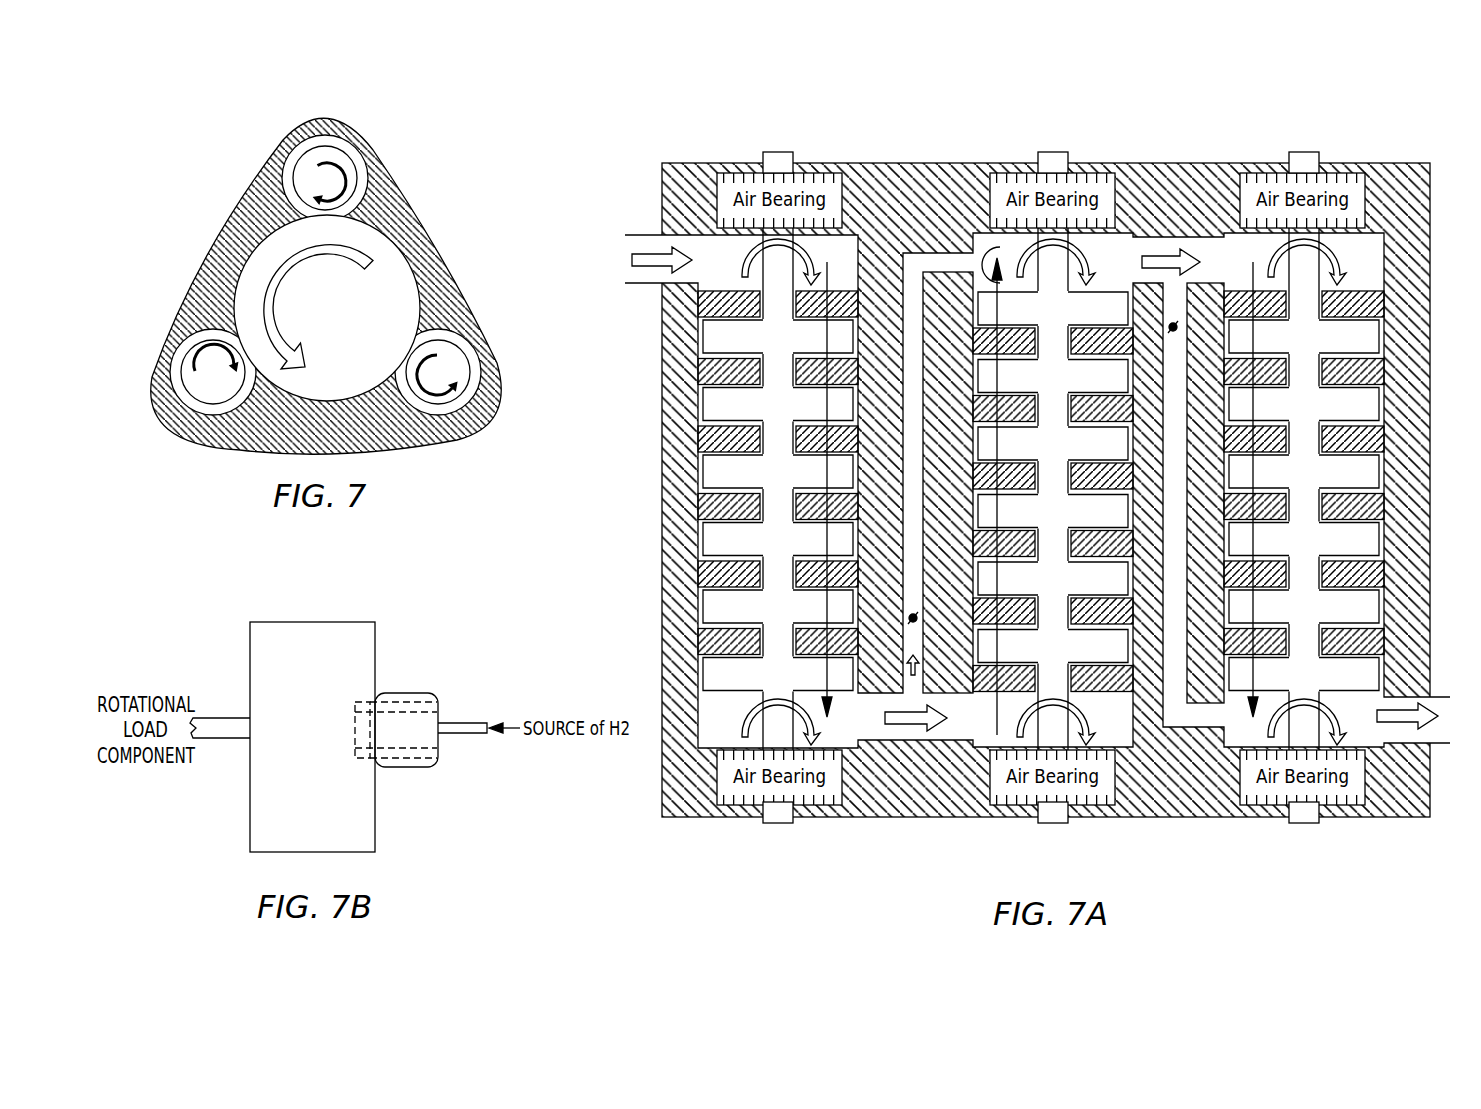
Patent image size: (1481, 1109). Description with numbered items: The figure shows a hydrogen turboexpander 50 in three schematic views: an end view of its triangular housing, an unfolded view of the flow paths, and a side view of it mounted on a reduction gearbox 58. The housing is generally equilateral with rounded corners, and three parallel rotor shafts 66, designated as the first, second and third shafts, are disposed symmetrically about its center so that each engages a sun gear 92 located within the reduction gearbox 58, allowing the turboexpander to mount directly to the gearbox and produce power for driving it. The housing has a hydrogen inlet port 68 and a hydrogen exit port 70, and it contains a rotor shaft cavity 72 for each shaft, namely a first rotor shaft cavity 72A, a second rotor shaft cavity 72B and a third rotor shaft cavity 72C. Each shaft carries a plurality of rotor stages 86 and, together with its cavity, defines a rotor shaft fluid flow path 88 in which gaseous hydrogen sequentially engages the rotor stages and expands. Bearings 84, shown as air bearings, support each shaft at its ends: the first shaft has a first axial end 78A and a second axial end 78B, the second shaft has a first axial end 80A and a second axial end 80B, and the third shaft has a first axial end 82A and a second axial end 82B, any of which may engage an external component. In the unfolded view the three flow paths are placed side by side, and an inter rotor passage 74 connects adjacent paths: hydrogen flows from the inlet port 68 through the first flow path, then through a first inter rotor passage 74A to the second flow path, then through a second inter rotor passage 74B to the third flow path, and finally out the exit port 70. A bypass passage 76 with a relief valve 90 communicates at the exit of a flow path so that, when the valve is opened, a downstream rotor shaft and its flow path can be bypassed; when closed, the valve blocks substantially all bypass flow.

In FIG. 7, the turboexpander 50 is at (325, 286).
In FIG. 7B, the turboexpander 50 is at (422, 728).
In FIG. 7A, the turboexpander 50 is at (1016, 482).
In FIG. 7B, the reduction gearbox 58 is at (321, 822).
In FIG. 7B, the rotor shaft 66 is at (422, 700).
In FIG. 7A, the rotor shaft 66 is at (690, 405).
In FIG. 7A, the hydrogen inlet port 68 is at (633, 238).
In FIG. 7A, the hydrogen exit port 70 is at (1425, 735).
In FIG. 7A, the rotor shaft cavity 72 is at (991, 576).
In FIG. 7A, the first rotor shaft cavity 72A is at (707, 507).
In FIG. 7A, the second rotor shaft cavity 72B is at (1128, 615).
In FIG. 7A, the third rotor shaft cavity 72C is at (1372, 505).
In FIG. 7A, the inter rotor passage 74 is at (1067, 487).
In FIG. 7A, the first inter rotor passage 74A is at (905, 728).
In FIG. 7A, the second inter rotor passage 74B is at (1185, 243).
In FIG. 7A, the bypass passage 76 is at (903, 385).
In FIG. 7A, the first rotor shaft first axial end 78A is at (773, 152).
In FIG. 7A, the first rotor shaft second axial end 78B is at (775, 823).
In FIG. 7A, the second rotor shaft first axial end 80A is at (1045, 823).
In FIG. 7A, the second rotor shaft second axial end 80B is at (1050, 152).
In FIG. 7A, the third rotor shaft first axial end 82A is at (1312, 152).
In FIG. 7A, the third rotor shaft second axial end 82B is at (1305, 823).
In FIG. 7A, the bearing 84 is at (710, 200).
In FIG. 7A, the rotor stage 86 is at (1098, 290).
In FIG. 7A, the rotor shaft fluid flow path 88 is at (850, 705).
In FIG. 7A, the relief valve 90 is at (1173, 322).
In FIG. 7, the sun gear 92 is at (348, 387).
In FIG. 7B, the sun gear 92 is at (354, 730).